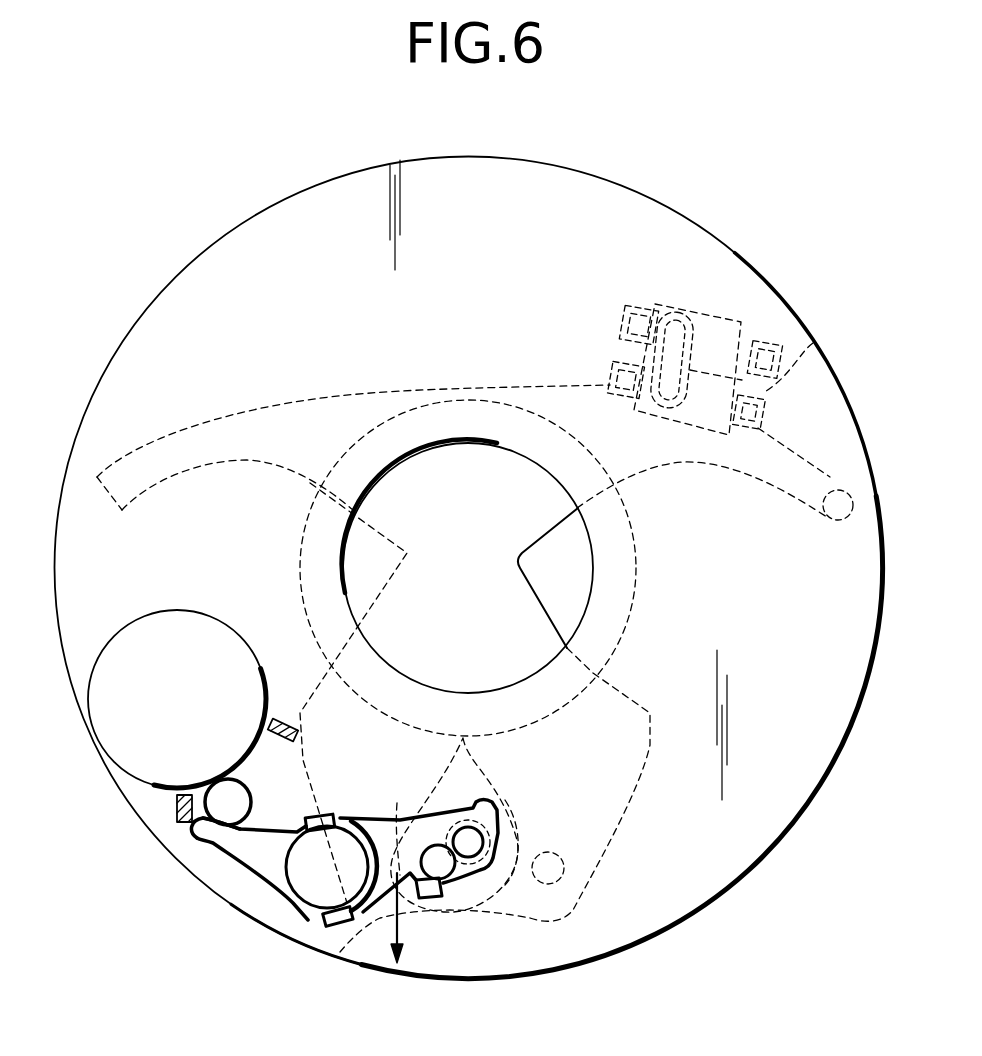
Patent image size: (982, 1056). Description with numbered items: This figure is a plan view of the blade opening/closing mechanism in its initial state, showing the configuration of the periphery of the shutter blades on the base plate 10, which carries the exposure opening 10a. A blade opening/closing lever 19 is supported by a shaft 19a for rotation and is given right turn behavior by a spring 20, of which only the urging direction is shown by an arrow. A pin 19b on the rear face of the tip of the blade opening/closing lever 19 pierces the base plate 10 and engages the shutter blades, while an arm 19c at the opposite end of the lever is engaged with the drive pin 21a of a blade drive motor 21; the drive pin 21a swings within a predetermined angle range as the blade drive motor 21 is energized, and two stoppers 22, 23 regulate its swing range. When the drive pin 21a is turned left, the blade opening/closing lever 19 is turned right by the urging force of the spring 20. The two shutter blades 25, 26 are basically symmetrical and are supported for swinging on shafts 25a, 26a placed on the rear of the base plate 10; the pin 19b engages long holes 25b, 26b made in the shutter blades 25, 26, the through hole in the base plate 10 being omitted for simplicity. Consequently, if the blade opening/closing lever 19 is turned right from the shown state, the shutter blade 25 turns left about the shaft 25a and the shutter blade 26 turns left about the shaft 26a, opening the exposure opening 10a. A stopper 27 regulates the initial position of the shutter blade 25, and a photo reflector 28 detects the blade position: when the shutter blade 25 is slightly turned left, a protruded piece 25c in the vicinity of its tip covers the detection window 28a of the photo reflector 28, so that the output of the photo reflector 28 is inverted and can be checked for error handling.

The base plate 10 is at (250, 220).
The exposure opening 10a is at (390, 478).
The blade opening/closing lever 19 is at (276, 891).
The shaft 19a is at (300, 925).
The pin 19b is at (465, 850).
The arm 19c is at (210, 850).
The spring 20 is at (394, 928).
The blade drive motor 21 is at (135, 617).
The drive pin 21a is at (207, 790).
The stopper 22 is at (176, 818).
The stopper 23 is at (287, 718).
The shutter blade 25 is at (685, 465).
The shaft 25a is at (565, 866).
The long hole 25b is at (517, 853).
The protruded piece 25c is at (813, 343).
The shutter blade 26 is at (309, 400).
The shaft 26a is at (398, 803).
The long hole 26b is at (500, 810).
The stopper 27 is at (835, 522).
The photo reflector 28 is at (650, 303).
The detection window 28a is at (700, 327).